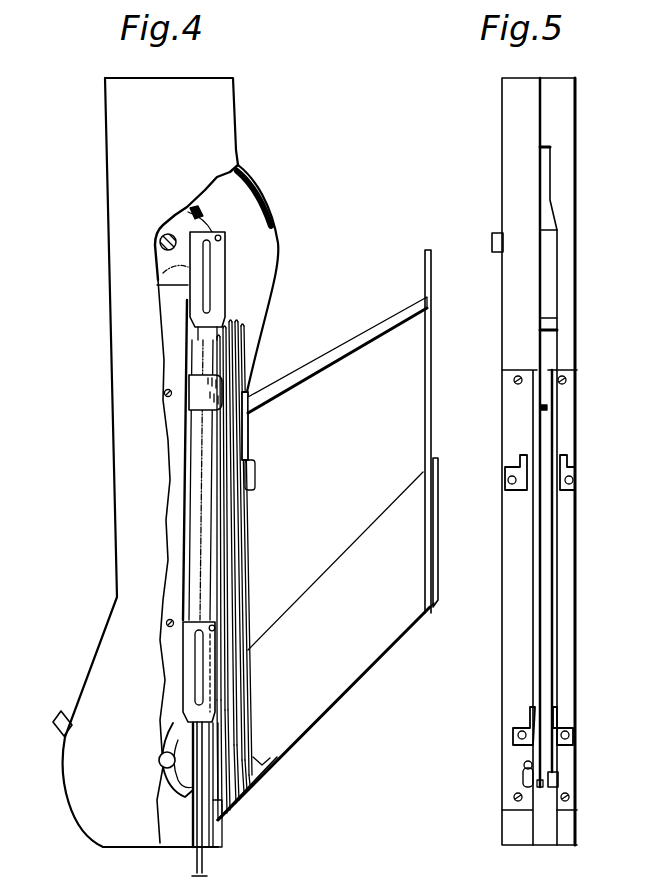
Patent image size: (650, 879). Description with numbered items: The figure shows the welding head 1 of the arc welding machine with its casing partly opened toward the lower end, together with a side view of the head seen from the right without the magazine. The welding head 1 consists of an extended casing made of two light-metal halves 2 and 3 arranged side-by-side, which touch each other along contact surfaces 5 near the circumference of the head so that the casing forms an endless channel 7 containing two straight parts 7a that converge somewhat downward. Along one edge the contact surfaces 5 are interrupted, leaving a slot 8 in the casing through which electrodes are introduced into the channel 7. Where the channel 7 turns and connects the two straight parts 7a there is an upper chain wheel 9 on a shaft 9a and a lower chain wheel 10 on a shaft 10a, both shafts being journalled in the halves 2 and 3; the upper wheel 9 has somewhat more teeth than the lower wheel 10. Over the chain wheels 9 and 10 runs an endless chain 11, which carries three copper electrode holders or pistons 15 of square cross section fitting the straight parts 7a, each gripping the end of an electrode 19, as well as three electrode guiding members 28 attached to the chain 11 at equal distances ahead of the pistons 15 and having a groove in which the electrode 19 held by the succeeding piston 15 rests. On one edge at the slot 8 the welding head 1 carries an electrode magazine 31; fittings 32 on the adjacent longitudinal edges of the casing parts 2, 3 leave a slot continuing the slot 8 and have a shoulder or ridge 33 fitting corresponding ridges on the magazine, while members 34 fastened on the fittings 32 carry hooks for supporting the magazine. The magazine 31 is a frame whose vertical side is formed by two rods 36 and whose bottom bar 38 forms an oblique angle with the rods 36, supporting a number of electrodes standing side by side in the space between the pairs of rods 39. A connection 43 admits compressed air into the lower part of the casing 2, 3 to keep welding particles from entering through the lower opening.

In FIG. 4, the welding head 1 is at (112, 495).
In FIG. 5, the casing half 2 is at (565, 245).
In FIG. 4, the casing half 3 is at (125, 287).
In FIG. 5, the casing half 3 is at (518, 275).
In FIG. 5, the contact surfaces 5 is at (539, 112).
In FIG. 4, the endless channel 7 is at (248, 217).
In FIG. 4, the straight parts of channel 7a is at (192, 437).
In FIG. 5, the slot 8 is at (548, 353).
In FIG. 4, the upper chain wheel 9 is at (197, 212).
In FIG. 4, the shaft 9a is at (162, 240).
In FIG. 4, the lower chain wheel 10 is at (178, 780).
In FIG. 4, the shaft 10a is at (167, 763).
In FIG. 4, the endless chain 11 is at (203, 342).
In FIG. 4, the electrode holder or piston 15 is at (213, 280).
In FIG. 4, the electrode 19 is at (203, 866).
In FIG. 4, the electrode guiding member 28 is at (200, 385).
In FIG. 4, the electrode magazine 31 is at (432, 413).
In FIG. 5, the fittings 32 is at (515, 567).
In FIG. 5, the shoulder or ridge 33 is at (535, 600).
In FIG. 5, the members 34 is at (567, 472).
In FIG. 4, the vertical side rods of magazine 36 is at (243, 421).
In FIG. 4, the bottom bar 38 is at (310, 735).
In FIG. 4, the rods 39 is at (355, 335).
In FIG. 4, the connection 43 is at (63, 712).